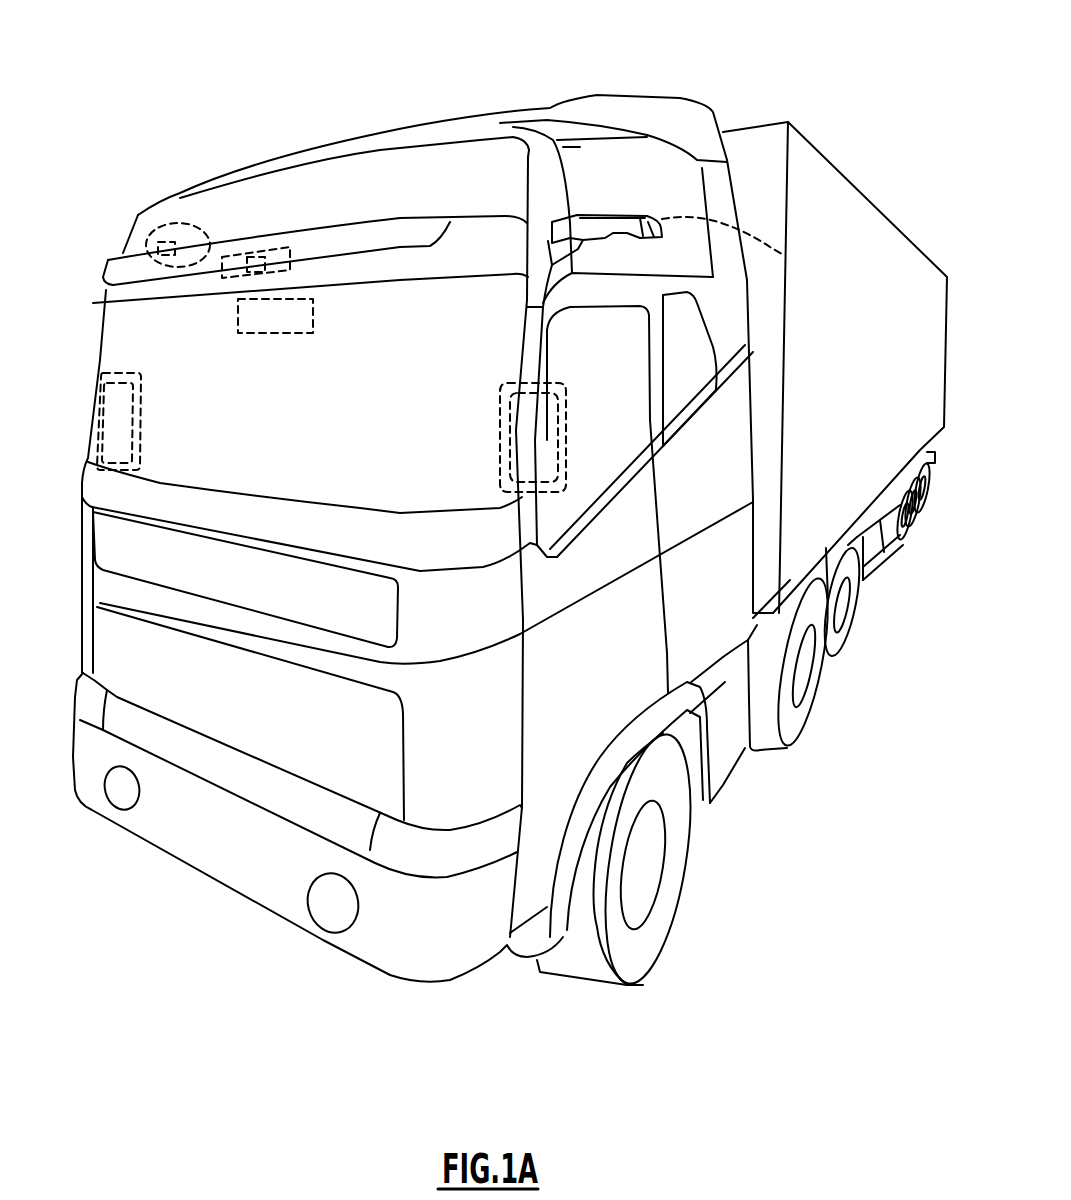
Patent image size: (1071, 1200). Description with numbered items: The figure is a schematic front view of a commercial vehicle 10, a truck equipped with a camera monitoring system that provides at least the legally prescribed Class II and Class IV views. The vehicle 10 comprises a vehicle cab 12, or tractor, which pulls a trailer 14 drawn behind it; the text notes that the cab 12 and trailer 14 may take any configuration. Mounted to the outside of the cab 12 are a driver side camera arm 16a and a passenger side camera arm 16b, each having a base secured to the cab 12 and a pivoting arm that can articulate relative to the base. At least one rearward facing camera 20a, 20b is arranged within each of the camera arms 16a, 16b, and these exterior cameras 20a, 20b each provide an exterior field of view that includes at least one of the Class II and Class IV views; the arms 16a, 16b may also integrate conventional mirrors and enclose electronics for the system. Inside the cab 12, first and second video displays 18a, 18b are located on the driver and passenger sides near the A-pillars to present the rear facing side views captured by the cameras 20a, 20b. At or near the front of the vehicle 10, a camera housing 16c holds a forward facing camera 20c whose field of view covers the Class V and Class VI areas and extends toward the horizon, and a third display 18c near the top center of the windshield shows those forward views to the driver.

The commercial vehicle 10 is at (864, 62).
The vehicle cab 12 is at (82, 538).
The trailer 14 is at (905, 280).
The driver side camera arm 16a is at (600, 227).
The passenger side camera arm 16b is at (156, 247).
The camera housing 16c is at (243, 270).
The first video display 18a is at (510, 427).
The second video display 18b is at (123, 407).
The third display 18c is at (313, 311).
The rearward facing camera 20a is at (782, 254).
The rearward facing camera 20b is at (150, 232).
The forward facing camera 20c is at (243, 272).